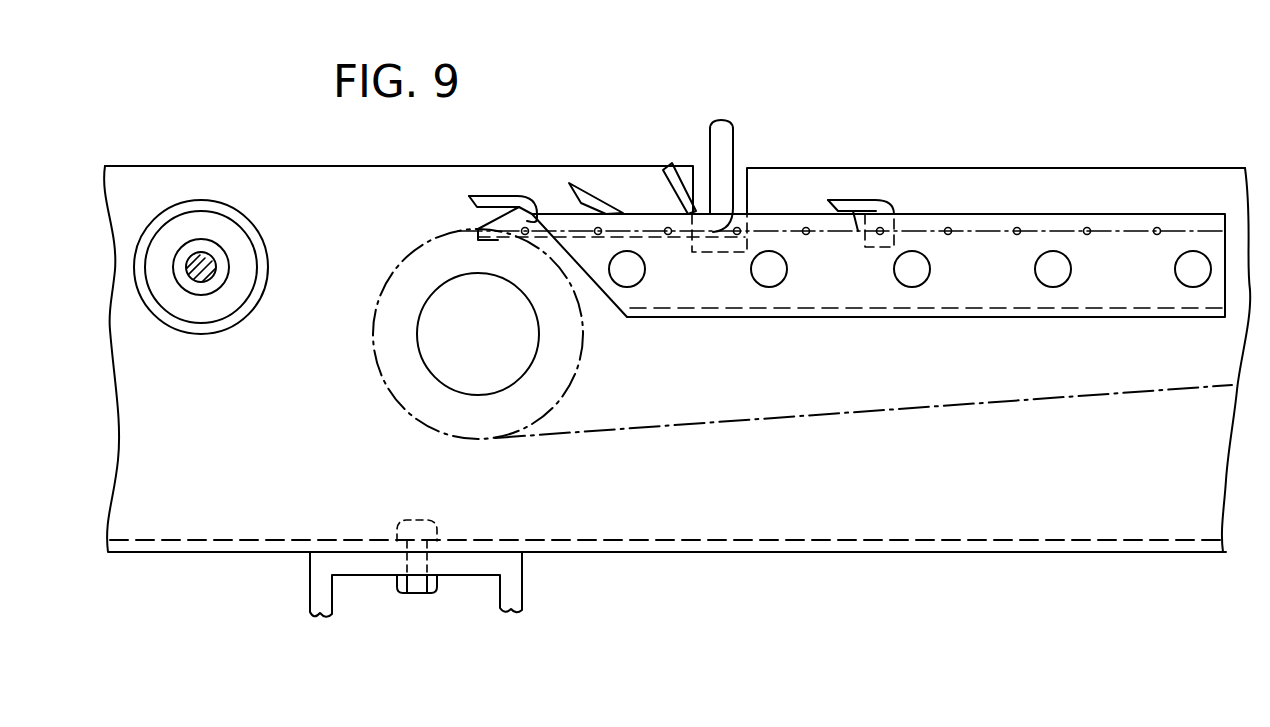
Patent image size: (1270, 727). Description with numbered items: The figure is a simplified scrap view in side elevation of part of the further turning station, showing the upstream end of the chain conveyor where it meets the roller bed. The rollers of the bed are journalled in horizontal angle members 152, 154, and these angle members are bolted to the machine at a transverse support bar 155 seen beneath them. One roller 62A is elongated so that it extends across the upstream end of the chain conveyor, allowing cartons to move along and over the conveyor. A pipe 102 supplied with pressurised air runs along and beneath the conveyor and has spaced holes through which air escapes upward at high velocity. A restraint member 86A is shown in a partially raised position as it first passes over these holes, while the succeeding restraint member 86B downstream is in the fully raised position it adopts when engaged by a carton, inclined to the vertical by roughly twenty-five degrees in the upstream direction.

The roller 62A is at (243, 208).
The restraint member 86A is at (597, 186).
The restraint member 86B is at (657, 190).
The pipe 102 is at (733, 125).
The horizontal angle member 154 is at (822, 263).
The horizontal angle member 152 is at (1048, 483).
The transverse support bar 155 is at (321, 601).